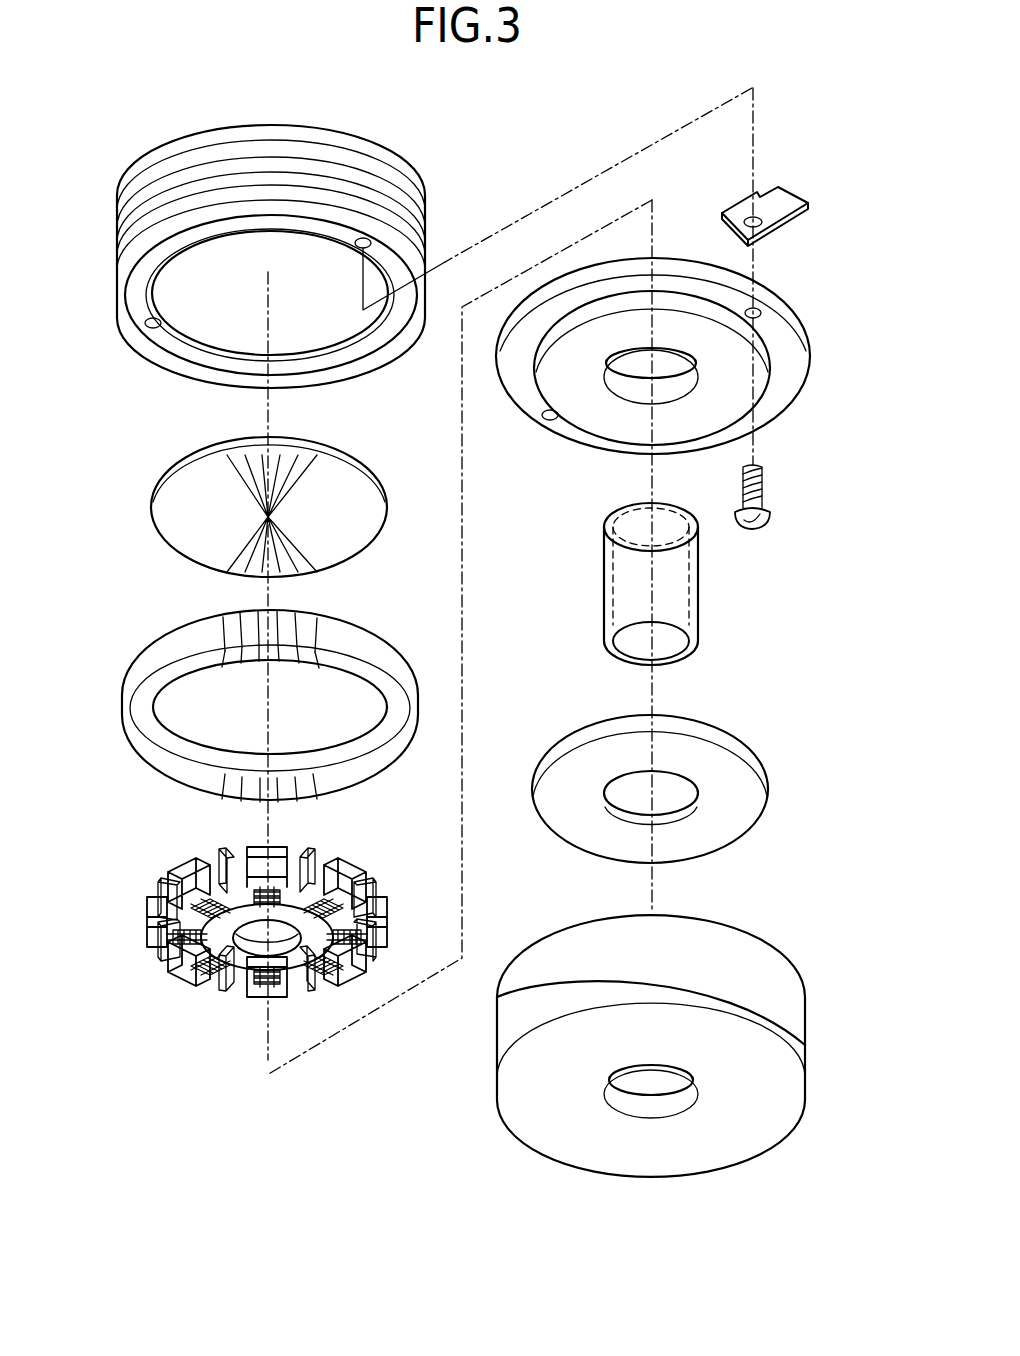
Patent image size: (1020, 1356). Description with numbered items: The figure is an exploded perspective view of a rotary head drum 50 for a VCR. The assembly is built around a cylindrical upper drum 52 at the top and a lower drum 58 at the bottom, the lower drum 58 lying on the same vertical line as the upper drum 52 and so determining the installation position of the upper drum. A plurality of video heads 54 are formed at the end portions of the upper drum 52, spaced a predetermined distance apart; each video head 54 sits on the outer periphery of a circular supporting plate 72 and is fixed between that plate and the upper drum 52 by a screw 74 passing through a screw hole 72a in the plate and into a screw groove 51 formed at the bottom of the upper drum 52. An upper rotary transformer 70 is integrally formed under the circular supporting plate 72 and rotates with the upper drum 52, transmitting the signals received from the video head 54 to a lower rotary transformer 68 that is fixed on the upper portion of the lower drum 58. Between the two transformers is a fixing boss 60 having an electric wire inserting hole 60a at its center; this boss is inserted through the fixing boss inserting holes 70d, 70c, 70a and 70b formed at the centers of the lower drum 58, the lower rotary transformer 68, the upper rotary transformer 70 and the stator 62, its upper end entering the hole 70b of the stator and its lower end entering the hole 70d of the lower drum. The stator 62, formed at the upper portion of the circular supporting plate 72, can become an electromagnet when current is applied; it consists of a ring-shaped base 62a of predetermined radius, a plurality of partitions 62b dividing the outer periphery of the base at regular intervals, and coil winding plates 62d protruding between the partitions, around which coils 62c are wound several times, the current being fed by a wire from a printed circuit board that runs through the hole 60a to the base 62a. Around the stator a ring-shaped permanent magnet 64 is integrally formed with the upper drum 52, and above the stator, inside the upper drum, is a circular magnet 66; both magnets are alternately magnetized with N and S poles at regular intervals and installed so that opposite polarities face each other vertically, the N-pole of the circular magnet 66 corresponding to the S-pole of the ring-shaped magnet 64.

The head drum 50 is at (93, 86).
The screw groove 51 is at (370, 243).
The upper drum 52 is at (117, 255).
The video head 54 is at (790, 187).
The lower drum 58 is at (512, 1017).
The fixing boss 60 is at (668, 582).
The electric wire inserting hole 60a is at (665, 638).
The stator 62 is at (218, 1000).
The ring-shaped base 62a is at (243, 973).
The partitions 62b is at (173, 963).
The coils 62c is at (190, 938).
The coil winding plates 62d is at (160, 918).
The ring-shaped magnet 64 is at (123, 724).
The circular magnet 66 is at (183, 527).
The lower rotary transformer 68 is at (700, 755).
The upper rotary transformer 70 is at (730, 400).
The fixing boss inserting hole 70a is at (651, 360).
The fixing boss inserting hole 70b is at (287, 945).
The fixing boss inserting hole 70c is at (670, 792).
The fixing boss inserting hole 70d is at (640, 1082).
The circular supporting plate 72 is at (652, 287).
The screw hole 72a is at (761, 314).
The screw 74 is at (764, 497).